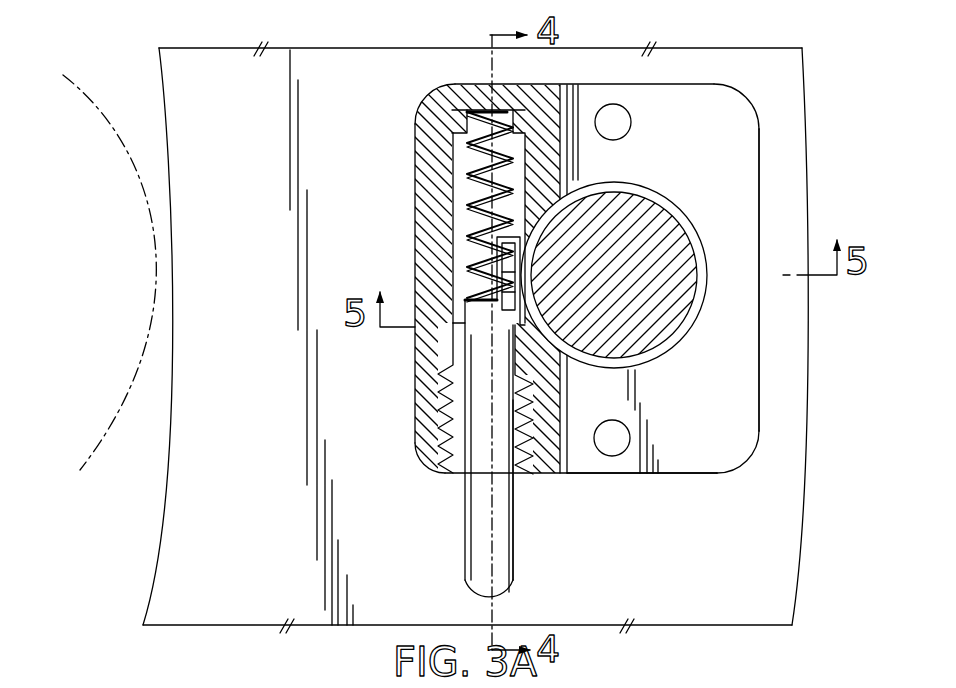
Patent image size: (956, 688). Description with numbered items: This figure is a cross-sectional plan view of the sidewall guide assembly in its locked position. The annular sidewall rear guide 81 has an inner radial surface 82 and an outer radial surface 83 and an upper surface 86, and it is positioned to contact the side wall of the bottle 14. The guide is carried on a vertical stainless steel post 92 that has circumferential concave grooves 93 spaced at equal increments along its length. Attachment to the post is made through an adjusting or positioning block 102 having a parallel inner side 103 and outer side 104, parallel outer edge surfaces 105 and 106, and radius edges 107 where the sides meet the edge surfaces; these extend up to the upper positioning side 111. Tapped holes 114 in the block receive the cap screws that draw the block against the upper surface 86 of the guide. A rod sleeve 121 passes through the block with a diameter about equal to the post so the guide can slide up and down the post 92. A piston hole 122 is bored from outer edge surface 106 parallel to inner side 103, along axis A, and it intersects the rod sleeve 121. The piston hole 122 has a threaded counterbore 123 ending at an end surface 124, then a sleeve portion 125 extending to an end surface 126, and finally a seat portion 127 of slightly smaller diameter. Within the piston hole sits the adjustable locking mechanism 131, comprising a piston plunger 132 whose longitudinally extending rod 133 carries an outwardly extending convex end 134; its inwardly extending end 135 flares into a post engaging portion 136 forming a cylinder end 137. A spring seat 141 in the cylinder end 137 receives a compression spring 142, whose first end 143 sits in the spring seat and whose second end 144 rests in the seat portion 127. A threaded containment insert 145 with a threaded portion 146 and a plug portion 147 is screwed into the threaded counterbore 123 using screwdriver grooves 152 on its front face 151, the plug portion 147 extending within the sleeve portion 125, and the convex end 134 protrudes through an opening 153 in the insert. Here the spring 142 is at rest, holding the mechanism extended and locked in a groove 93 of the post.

The bottle 14 is at (81, 472).
The annular sidewall rear guide 81 is at (787, 575).
The inner radial surface 82 is at (157, 565).
The outer radial surface 83 is at (808, 380).
The upper surface 86 is at (712, 613).
The vertical stainless steel post 92 is at (687, 232).
The circumferential concave groove 93 is at (680, 209).
The adjusting or positioning block 102 is at (760, 297).
The inner side 103 is at (440, 200).
The outer side 104 is at (760, 325).
The outer edge surface 105 is at (583, 105).
The outer edge surface 106 is at (685, 475).
The radius edges 107 is at (738, 92).
The upper positioning side 111 is at (737, 138).
The tapped holes 114 is at (598, 128).
The rod sleeve 121 is at (700, 260).
The piston hole 122 is at (450, 224).
The threaded counterbore 123 is at (440, 440).
The end surface 124 is at (443, 378).
The sleeve portion 125 is at (450, 216).
The end surface 126 is at (462, 160).
The seat portion 127 is at (467, 110).
The adjustable locking mechanism 131 is at (450, 258).
The piston plunger 132 is at (515, 557).
The longitudinally extending rod 133 is at (507, 513).
The outwardly extending convex end 134 is at (500, 593).
The inwardly extending end 135 is at (470, 333).
The post engaging portion 136 is at (521, 244).
The cylinder end 137 is at (518, 310).
The spring seat 141 is at (522, 266).
The compression spring 142 is at (580, 170).
The first end 143 is at (466, 296).
The second end 144 is at (480, 110).
The threaded containment insert 145 is at (440, 405).
The threaded portion 146 is at (545, 432).
The plug portion 147 is at (545, 365).
The front face 151 is at (450, 480).
The screwdriver grooves 152 is at (528, 478).
The opening 153 is at (553, 398).
The axis A is at (490, 550).